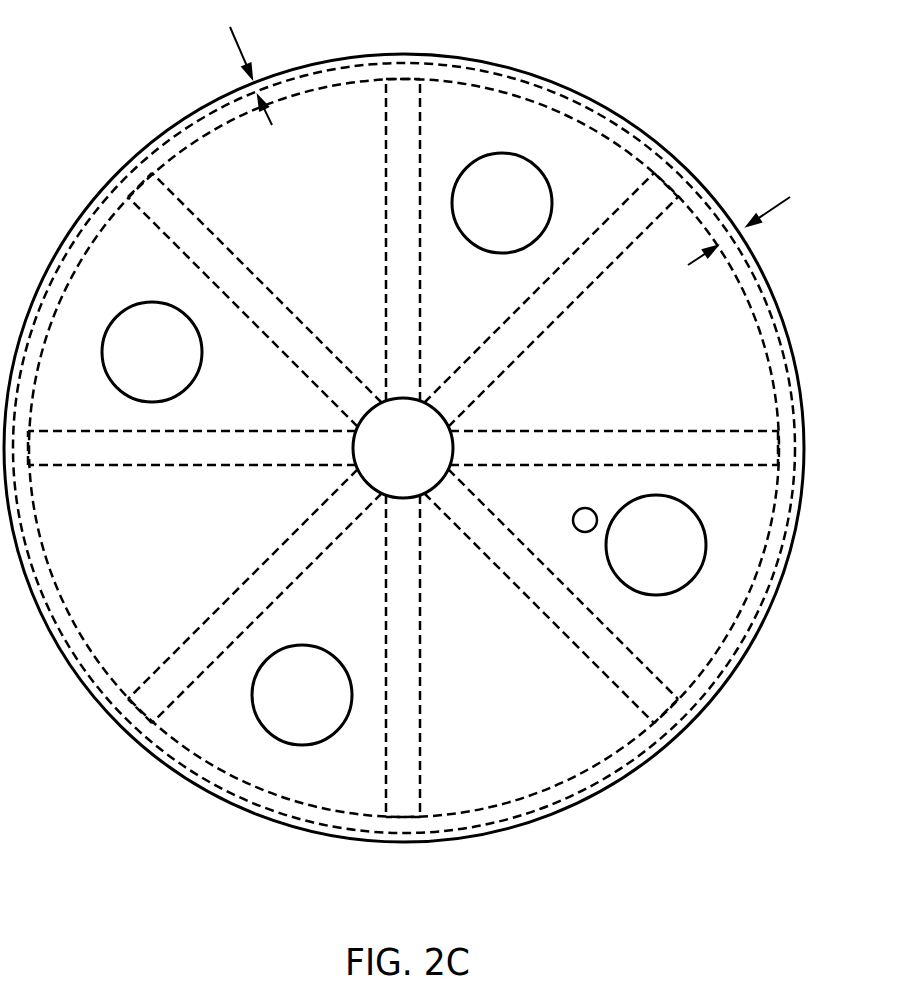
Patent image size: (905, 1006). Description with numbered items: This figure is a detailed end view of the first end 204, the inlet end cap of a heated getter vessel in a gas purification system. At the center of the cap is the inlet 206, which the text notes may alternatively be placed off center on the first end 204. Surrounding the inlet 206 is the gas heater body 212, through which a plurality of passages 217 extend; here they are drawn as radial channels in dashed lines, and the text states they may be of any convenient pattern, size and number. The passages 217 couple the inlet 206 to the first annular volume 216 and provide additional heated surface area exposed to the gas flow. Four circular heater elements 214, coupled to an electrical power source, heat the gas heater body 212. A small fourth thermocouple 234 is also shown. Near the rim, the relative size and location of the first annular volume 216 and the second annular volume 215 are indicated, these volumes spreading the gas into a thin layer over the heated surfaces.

The first end 204 is at (302, 832).
The inlet 206 is at (402, 475).
The gas heater body 212 is at (103, 633).
The heater elements 214 is at (492, 172).
The second annular volume 215 is at (242, 88).
The first annular volume 216 is at (728, 230).
The passages 217 is at (178, 195).
The fourth thermocouple 234 is at (583, 518).